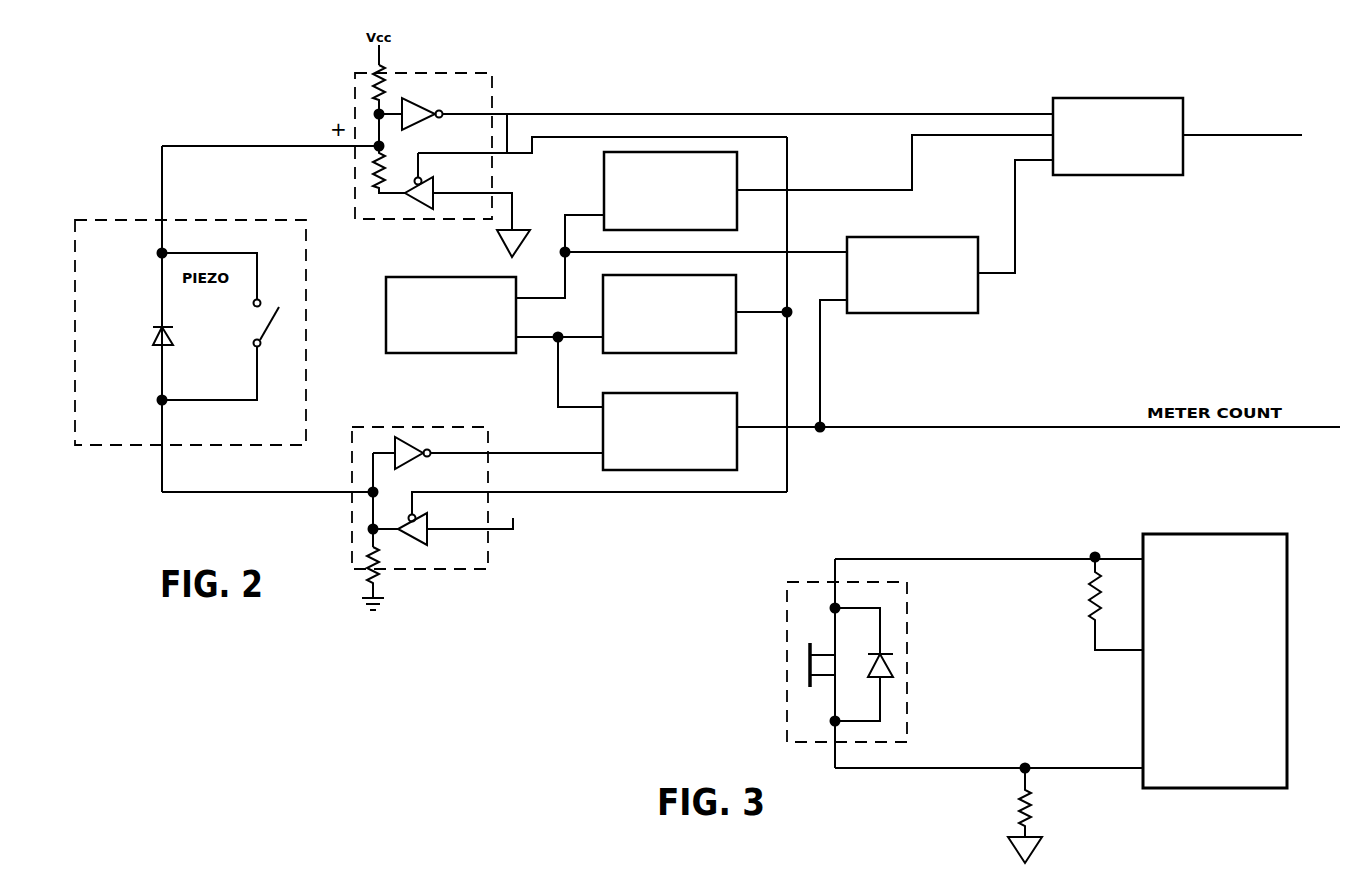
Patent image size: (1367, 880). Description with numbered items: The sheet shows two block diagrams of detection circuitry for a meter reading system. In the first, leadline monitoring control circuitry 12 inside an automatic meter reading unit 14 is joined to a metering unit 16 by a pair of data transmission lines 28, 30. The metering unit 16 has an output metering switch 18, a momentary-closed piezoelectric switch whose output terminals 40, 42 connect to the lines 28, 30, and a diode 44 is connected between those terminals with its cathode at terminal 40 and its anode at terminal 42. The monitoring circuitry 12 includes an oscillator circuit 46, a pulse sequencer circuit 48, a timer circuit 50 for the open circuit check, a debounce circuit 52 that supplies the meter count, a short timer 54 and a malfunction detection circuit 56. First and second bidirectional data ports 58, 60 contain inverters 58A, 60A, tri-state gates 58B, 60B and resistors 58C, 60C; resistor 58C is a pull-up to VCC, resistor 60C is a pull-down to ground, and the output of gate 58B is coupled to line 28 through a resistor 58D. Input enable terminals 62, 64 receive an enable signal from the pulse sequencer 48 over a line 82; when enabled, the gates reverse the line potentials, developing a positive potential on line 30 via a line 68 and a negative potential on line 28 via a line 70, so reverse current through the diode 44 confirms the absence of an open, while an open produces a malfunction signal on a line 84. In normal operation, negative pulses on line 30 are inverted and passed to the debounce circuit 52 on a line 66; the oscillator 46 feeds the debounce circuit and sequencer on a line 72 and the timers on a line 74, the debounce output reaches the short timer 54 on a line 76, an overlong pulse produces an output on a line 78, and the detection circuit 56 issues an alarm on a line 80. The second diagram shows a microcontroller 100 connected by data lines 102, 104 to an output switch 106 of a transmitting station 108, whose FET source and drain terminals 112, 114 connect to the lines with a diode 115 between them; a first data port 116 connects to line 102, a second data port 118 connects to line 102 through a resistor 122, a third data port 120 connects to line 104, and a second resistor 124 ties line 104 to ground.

In FIG. 2, the leadline monitoring control circuitry 12 is at (694, 537).
In FIG. 2, the automatic meter reading unit 14 is at (411, 615).
In FIG. 2, the metering unit 16 is at (105, 447).
In FIG. 2, the output metering switch 18 is at (248, 321).
In FIG. 2, the data transmission line 28 is at (258, 146).
In FIG. 2, the data transmission line 30 is at (271, 493).
In FIG. 2, the output terminal 40 is at (236, 253).
In FIG. 2, the output terminal 42 is at (218, 400).
In FIG. 2, the diode 44 is at (152, 335).
In FIG. 2, the oscillator circuit 46 is at (487, 353).
In FIG. 2, the pulse sequencer circuit 48 is at (727, 296).
In FIG. 2, the timer circuit 50 is at (603, 165).
In FIG. 2, the debounce circuit 52 is at (603, 421).
In FIG. 2, the short timer 54 is at (938, 236).
In FIG. 2, the malfunction detection circuit 56 is at (1105, 98).
In FIG. 2, the first bidirectional data port 58 is at (492, 78).
In FIG. 2, the inverter 58A is at (412, 117).
In FIG. 2, the tri-state gate 58B is at (433, 197).
In FIG. 2, the resistor 58C is at (386, 76).
In FIG. 2, the resistor 58D is at (372, 172).
In FIG. 2, the second bidirectional data port 60 is at (490, 563).
In FIG. 2, the inverter 60A is at (408, 450).
In FIG. 2, the tri-state gate 60B is at (433, 537).
In FIG. 2, the resistor 60C is at (385, 550).
In FIG. 2, the input enable terminal 62 is at (507, 114).
In FIG. 2, the input enable terminal 64 is at (502, 490).
In FIG. 2, the line 66 is at (508, 452).
In FIG. 2, the line 68 is at (515, 523).
In FIG. 2, the line 70 is at (512, 212).
In FIG. 2, the line 72 is at (558, 378).
In FIG. 2, the line 74 is at (532, 297).
In FIG. 2, the line 76 is at (820, 397).
In FIG. 2, the line 78 is at (1015, 218).
In FIG. 2, the line 80 is at (1207, 135).
In FIG. 2, the line 82 is at (787, 362).
In FIG. 2, the line 84 is at (813, 113).
In FIG. 3, the microcontroller 100 is at (1287, 700).
In FIG. 3, the data line 102 is at (947, 559).
In FIG. 3, the data line 104 is at (921, 770).
In FIG. 3, the output switch 106 is at (803, 693).
In FIG. 3, the transmitting station 108 is at (785, 600).
In FIG. 3, the source terminal 112 is at (825, 655).
In FIG. 3, the drain terminal 114 is at (827, 677).
In FIG. 3, the diode 115 is at (890, 660).
In FIG. 3, the first data port 116 is at (1143, 553).
In FIG. 3, the second data port 118 is at (1143, 652).
In FIG. 3, the third data port 120 is at (1143, 767).
In FIG. 3, the resistor 122 is at (1096, 590).
In FIG. 3, the second resistor 124 is at (1020, 798).